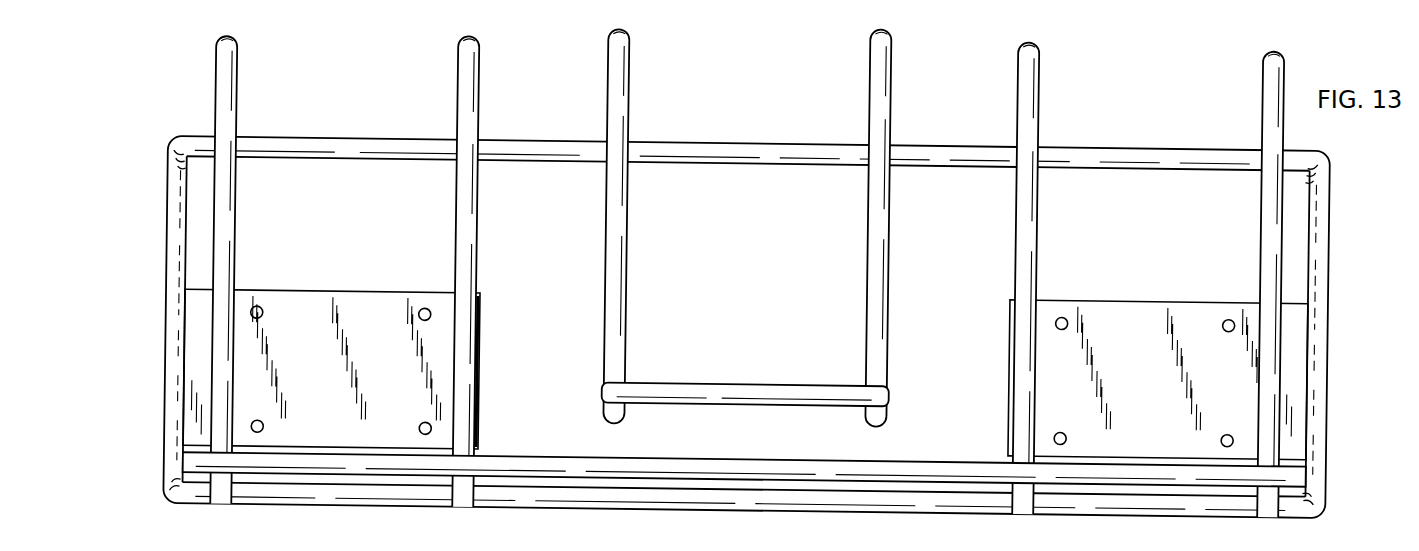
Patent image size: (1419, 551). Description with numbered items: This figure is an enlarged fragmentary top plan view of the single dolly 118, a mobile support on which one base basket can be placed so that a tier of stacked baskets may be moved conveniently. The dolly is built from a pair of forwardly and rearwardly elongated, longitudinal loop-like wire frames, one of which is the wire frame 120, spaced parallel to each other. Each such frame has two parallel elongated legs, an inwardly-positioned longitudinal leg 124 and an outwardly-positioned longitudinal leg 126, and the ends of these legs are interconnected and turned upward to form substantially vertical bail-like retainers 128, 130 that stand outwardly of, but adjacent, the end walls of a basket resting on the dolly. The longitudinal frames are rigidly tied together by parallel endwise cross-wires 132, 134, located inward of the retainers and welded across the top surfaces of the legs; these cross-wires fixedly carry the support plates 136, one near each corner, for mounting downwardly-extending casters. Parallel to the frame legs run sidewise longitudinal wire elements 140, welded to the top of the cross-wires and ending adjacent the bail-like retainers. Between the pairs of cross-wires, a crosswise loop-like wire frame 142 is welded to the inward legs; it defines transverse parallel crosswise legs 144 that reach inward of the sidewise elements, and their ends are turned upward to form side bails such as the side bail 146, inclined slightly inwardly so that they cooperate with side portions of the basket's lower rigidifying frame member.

The single dolly 118 is at (711, 143).
The longitudinal loop-like wire frame 120 is at (1372, 508).
The inwardly-positioned longitudinal leg 124 is at (354, 138).
The outwardly-positioned longitudinal leg 126 is at (772, 510).
The bail-like retainer 128 is at (168, 212).
The bail-like retainer 130 is at (1330, 226).
The cross-wire 132 is at (237, 221).
The cross-wire 134 is at (1260, 213).
The support plate 136 is at (373, 290).
The sidewise longitudinal wire element 140 is at (917, 463).
The crosswise loop-like wire frame 142 is at (869, 272).
The crosswise leg 144 is at (628, 291).
The side bail 146 is at (751, 402).